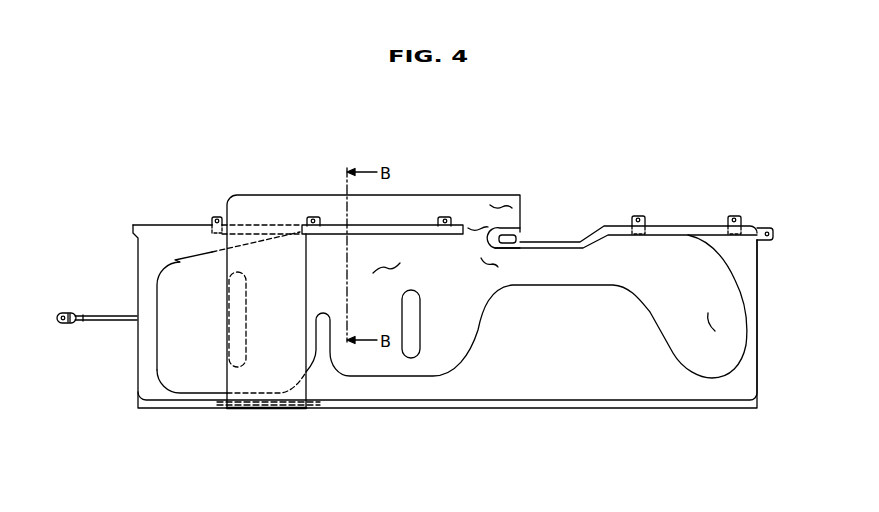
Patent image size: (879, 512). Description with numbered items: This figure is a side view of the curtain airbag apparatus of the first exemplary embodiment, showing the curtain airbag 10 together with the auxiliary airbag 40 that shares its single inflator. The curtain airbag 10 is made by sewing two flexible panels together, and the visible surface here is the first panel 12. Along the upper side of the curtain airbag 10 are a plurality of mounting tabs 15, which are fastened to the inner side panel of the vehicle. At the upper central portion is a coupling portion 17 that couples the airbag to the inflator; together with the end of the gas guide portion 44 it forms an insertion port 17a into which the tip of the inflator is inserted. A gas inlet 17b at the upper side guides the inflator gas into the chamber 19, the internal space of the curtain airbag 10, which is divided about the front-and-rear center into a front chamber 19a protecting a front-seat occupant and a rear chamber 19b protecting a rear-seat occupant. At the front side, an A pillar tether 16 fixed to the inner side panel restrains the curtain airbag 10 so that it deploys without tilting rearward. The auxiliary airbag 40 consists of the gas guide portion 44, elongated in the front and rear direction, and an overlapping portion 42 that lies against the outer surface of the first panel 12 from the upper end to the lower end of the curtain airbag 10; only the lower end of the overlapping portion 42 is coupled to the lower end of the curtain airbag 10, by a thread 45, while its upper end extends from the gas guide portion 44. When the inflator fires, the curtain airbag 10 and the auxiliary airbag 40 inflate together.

The curtain airbag 10 is at (761, 213).
The first panel 12 is at (563, 378).
The mounting tabs 15 is at (217, 215).
The A pillar tether 16 is at (92, 315).
The coupling portion 17 is at (508, 237).
The insertion port 17a is at (503, 205).
The gas inlet 17b is at (478, 229).
The chamber 19 is at (490, 258).
The front chamber 19a is at (392, 270).
The rear chamber 19b is at (714, 323).
The auxiliary airbag 40 is at (230, 189).
The overlapping portion 42 is at (247, 262).
The gas guide portion 44 is at (405, 213).
The thread 45 is at (272, 409).